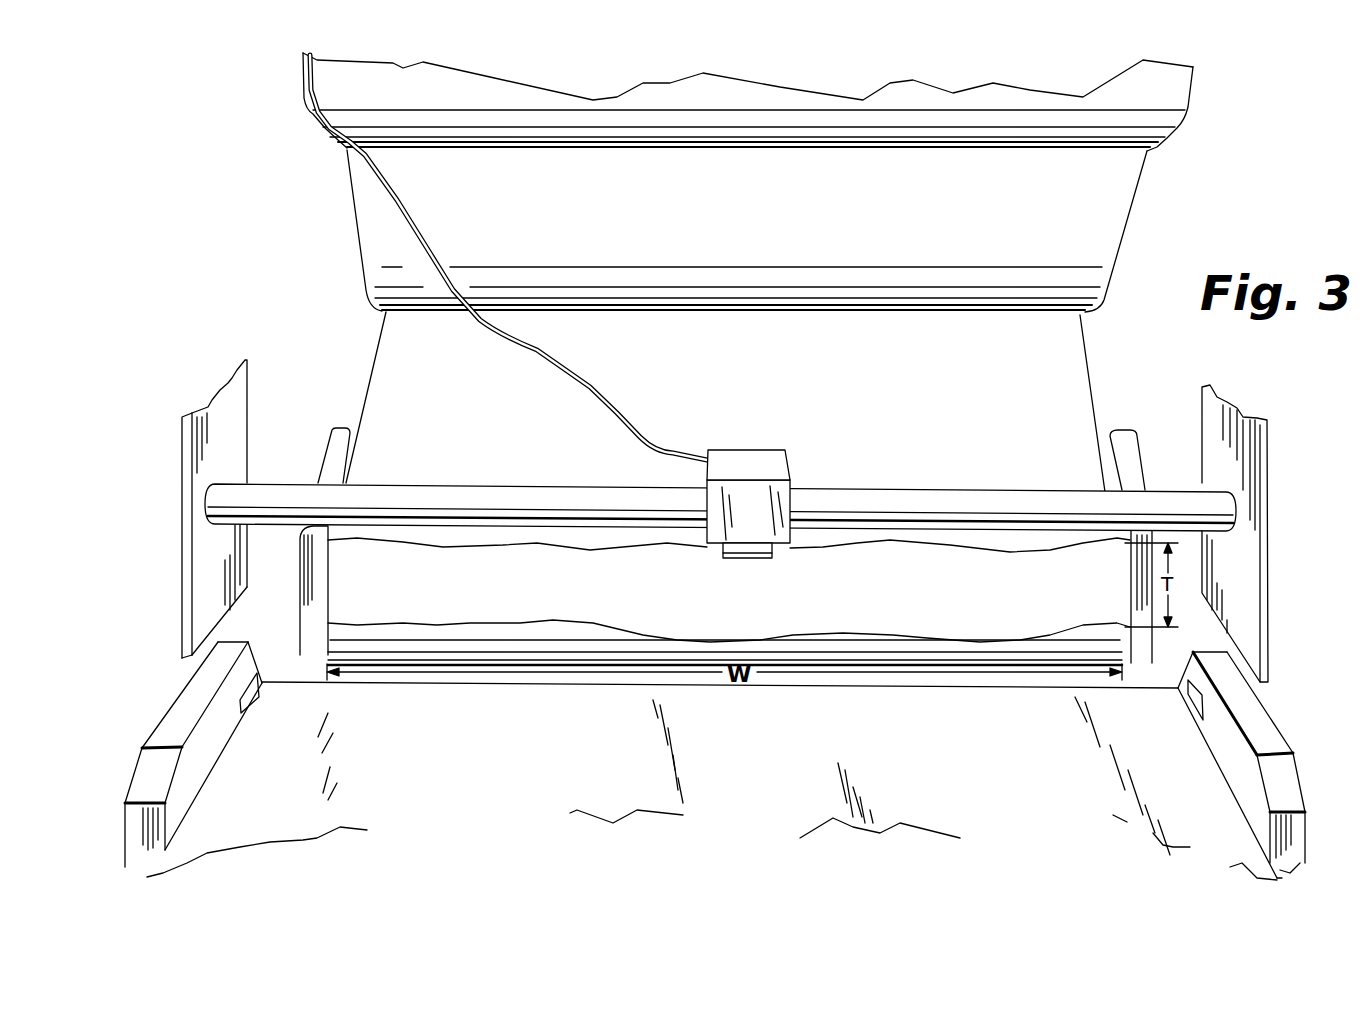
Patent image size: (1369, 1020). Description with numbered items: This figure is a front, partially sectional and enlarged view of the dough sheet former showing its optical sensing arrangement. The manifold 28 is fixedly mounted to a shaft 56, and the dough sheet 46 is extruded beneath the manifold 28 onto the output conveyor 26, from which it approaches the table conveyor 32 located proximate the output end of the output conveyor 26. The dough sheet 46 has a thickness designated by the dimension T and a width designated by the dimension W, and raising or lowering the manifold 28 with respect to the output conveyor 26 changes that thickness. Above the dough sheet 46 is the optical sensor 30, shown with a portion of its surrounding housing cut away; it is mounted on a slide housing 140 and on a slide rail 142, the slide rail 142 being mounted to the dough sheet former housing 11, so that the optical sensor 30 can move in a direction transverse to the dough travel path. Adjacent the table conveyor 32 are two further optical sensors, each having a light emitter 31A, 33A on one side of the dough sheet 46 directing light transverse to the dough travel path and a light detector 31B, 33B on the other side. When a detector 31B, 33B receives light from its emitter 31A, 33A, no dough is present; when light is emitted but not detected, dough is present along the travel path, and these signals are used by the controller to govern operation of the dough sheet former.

The dough sheet former housing 11 is at (1271, 533).
The output conveyor 26 is at (689, 546).
The manifold 28 is at (754, 182).
The optical sensor 30 is at (780, 487).
The light emitter 31A is at (1213, 765).
The light detector 31B is at (218, 754).
The table conveyor 32 is at (757, 774).
The light emitter 33A is at (1162, 719).
The light detector 33B is at (276, 715).
The dough sheet 46 is at (750, 477).
The shaft 56 is at (791, 83).
The slide housing 140 is at (765, 476).
The slide rail 142 is at (1154, 529).